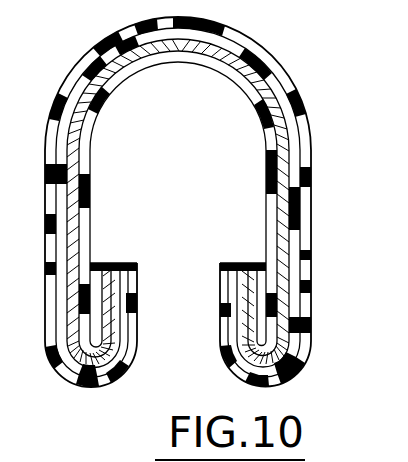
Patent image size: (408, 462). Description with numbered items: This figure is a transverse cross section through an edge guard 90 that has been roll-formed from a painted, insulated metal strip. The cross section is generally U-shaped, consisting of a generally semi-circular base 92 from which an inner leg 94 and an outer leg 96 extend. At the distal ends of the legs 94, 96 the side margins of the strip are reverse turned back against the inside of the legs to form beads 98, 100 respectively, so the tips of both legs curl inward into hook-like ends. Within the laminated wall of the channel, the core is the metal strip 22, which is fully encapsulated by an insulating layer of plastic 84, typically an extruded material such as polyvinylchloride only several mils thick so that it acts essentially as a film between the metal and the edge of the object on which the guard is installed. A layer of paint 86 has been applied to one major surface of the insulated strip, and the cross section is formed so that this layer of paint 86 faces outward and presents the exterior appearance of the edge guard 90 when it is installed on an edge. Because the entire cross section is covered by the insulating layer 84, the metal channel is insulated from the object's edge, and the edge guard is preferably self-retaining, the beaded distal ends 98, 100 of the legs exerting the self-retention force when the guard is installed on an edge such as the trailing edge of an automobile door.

The metal strip 22 is at (294, 220).
The insulating layer of plastic 84 is at (289, 118).
The layer of paint 86 is at (287, 82).
The edge guard 90 is at (307, 345).
The semi-circular base 92 is at (136, 46).
The inner leg 94 is at (72, 157).
The outer leg 96 is at (286, 153).
The bead 98 is at (70, 378).
The bead 100 is at (294, 378).